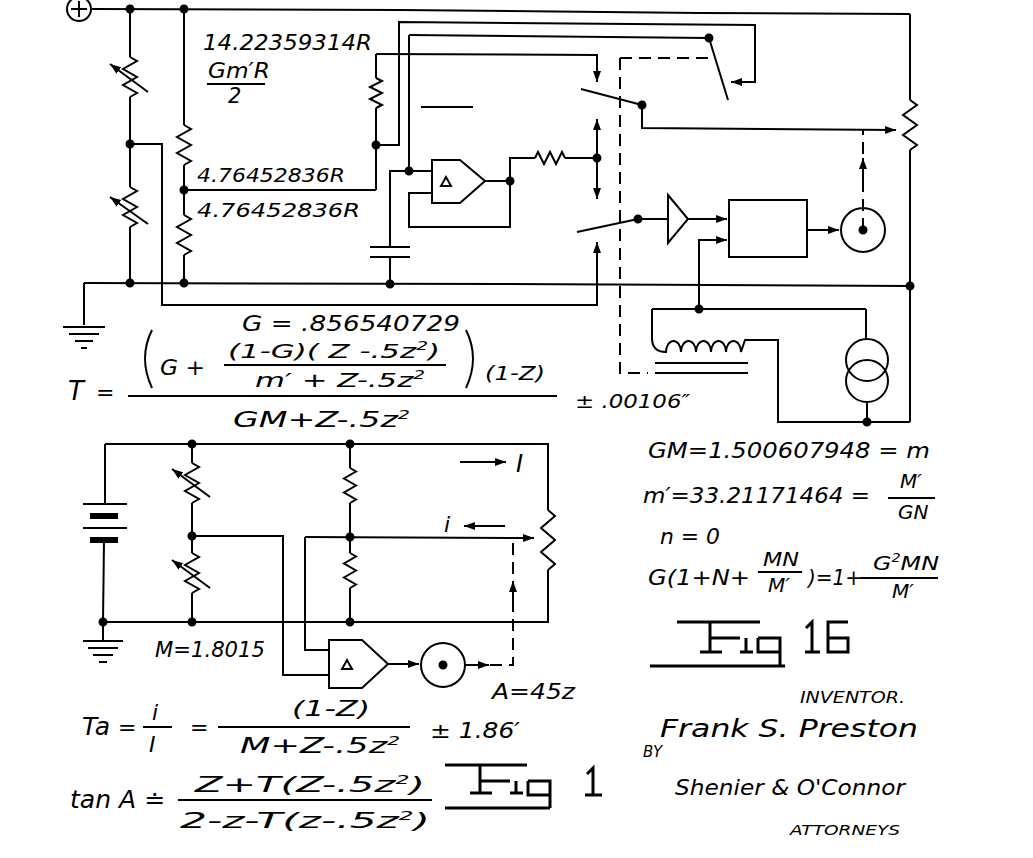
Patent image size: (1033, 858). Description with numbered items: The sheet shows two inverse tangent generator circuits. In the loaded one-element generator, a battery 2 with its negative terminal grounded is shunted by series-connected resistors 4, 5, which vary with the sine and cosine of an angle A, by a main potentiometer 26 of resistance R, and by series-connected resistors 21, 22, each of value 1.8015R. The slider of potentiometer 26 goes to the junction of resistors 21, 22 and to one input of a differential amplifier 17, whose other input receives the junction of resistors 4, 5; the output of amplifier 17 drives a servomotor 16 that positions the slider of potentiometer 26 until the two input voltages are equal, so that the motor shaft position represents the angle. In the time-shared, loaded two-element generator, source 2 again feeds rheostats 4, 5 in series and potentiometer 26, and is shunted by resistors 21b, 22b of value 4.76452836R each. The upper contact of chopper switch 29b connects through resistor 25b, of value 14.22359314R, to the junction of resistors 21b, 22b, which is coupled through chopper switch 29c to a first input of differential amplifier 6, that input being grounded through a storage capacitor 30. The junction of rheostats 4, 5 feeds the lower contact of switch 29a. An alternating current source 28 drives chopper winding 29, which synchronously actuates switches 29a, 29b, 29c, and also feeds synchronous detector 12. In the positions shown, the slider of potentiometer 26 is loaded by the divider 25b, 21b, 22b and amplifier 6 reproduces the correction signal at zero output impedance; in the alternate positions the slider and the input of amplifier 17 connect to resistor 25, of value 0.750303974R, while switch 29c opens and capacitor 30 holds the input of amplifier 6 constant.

In FIG. 16, the battery 2 is at (79, 21).
In FIG. 1, the battery 2 is at (120, 502).
In FIG. 16, the sine resistor 4 is at (138, 72).
In FIG. 1, the sine resistor 4 is at (200, 505).
In FIG. 16, the cosine resistor 5 is at (138, 205).
In FIG. 1, the cosine resistor 5 is at (198, 593).
In FIG. 16, the differential amplifier 6 is at (470, 204).
In FIG. 16, the synchronous detector 12 is at (790, 184).
In FIG. 16, the servomotor 16 is at (850, 252).
In FIG. 1, the servomotor 16 is at (456, 646).
In FIG. 16, the differential amplifier 17 is at (676, 198).
In FIG. 1, the differential amplifier 17 is at (370, 640).
In FIG. 1, the resistor 21 is at (352, 500).
In FIG. 1, the resistor 22 is at (354, 568).
In FIG. 16, the resistor 21b is at (192, 142).
In FIG. 16, the resistor 22b is at (192, 246).
In FIG. 16, the resistor 25 is at (555, 167).
In FIG. 16, the resistor 25b is at (372, 84).
In FIG. 16, the main potentiometer 26 is at (906, 97).
In FIG. 1, the main potentiometer 26 is at (546, 518).
In FIG. 16, the alternating current source 28 is at (846, 386).
In FIG. 16, the chopper winding 29 is at (742, 343).
In FIG. 16, the chopper switch 29a is at (582, 236).
In FIG. 16, the chopper switch 29b is at (580, 92).
In FIG. 16, the chopper switch 29c is at (716, 66).
In FIG. 16, the storage capacitor 30 is at (405, 250).